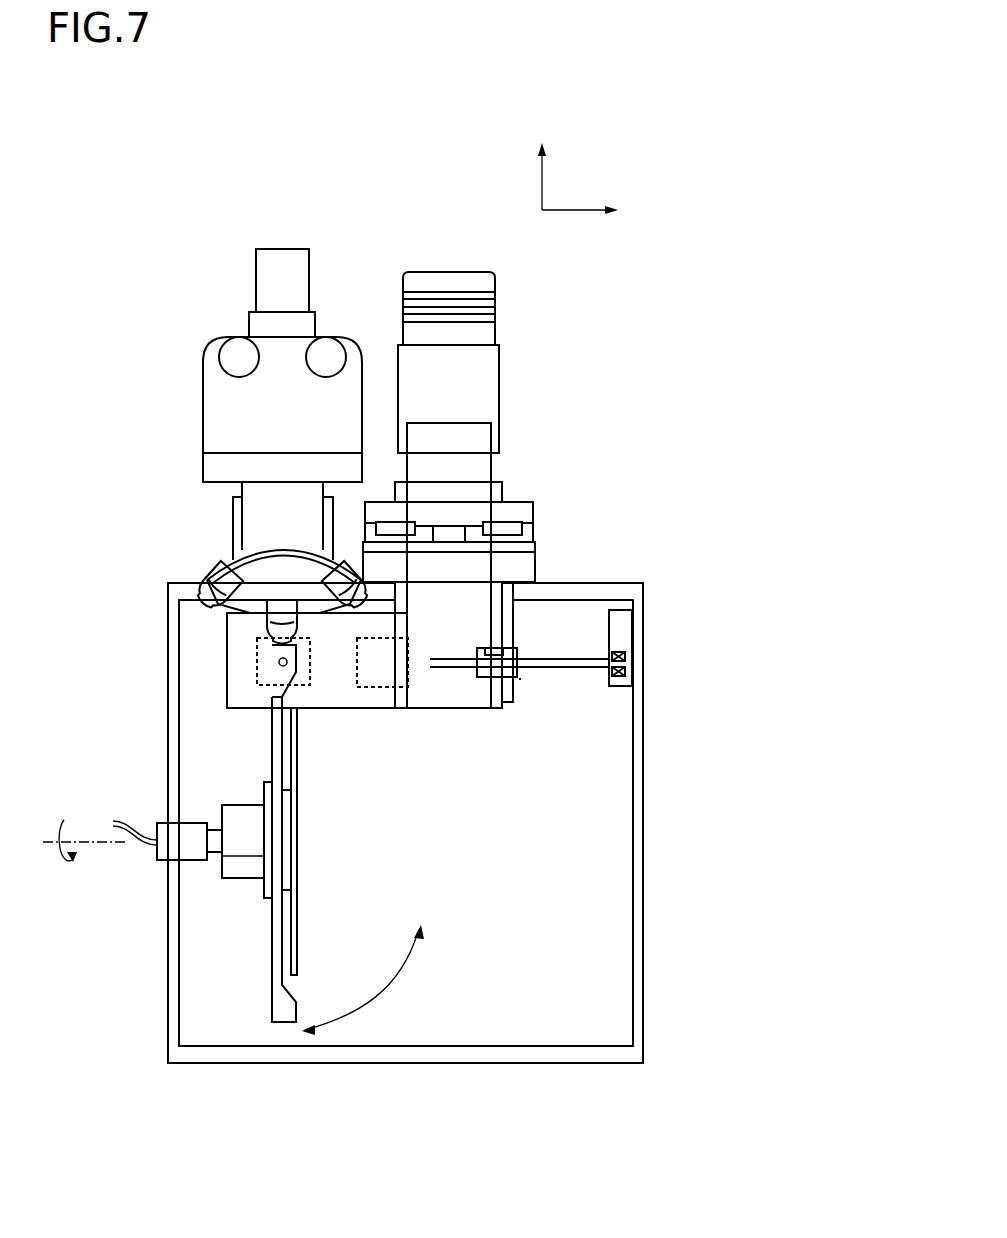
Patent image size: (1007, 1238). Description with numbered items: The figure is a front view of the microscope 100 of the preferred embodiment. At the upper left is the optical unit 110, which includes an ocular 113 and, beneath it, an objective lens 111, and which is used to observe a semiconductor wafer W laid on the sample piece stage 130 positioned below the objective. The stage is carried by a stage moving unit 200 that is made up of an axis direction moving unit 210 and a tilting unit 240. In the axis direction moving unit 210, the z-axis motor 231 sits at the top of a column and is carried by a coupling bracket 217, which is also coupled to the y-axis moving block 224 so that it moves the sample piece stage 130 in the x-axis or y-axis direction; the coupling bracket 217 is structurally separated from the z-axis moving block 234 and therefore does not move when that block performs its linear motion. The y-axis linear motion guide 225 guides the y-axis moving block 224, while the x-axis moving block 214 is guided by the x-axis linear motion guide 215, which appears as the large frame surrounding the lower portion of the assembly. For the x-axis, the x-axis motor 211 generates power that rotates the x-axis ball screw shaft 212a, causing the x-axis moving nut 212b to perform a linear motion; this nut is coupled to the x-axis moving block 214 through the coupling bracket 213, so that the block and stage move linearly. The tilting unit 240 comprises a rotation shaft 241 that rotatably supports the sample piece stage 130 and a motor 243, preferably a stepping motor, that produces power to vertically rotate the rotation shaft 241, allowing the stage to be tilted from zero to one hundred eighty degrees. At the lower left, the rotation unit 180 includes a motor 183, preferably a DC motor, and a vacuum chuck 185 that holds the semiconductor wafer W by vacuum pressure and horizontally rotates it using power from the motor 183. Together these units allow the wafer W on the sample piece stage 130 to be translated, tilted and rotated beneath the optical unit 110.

The microscope 100 is at (220, 228).
The optical unit 110 is at (78, 425).
The ocular 113 is at (230, 363).
The objective lens 111 is at (207, 587).
The stage moving unit 200 is at (738, 232).
The axis direction moving unit 210 is at (735, 827).
The z-axis motor 231 is at (483, 284).
The coupling bracket 217 is at (483, 466).
The z-axis moving block 234 is at (497, 493).
The y-axis linear motion guide 225 is at (517, 527).
The y-axis moving block 224 is at (527, 537).
The x-axis moving block 214 is at (520, 558).
The x-axis linear motion guide 215 is at (633, 577).
The coupling bracket 213 is at (505, 628).
The x-axis ball screw shaft 212a is at (573, 670).
The x-axis moving nut 212b is at (520, 678).
The x-axis motor 211 is at (392, 687).
The tilting unit 240 is at (78, 660).
The rotation shaft 241 is at (278, 661).
The motor 243 is at (248, 680).
The rotation unit 180 is at (78, 878).
The motor 183 is at (157, 848).
The vacuum chuck 185 is at (287, 890).
The sample piece stage 130 is at (284, 1016).
The semiconductor wafer W is at (298, 945).